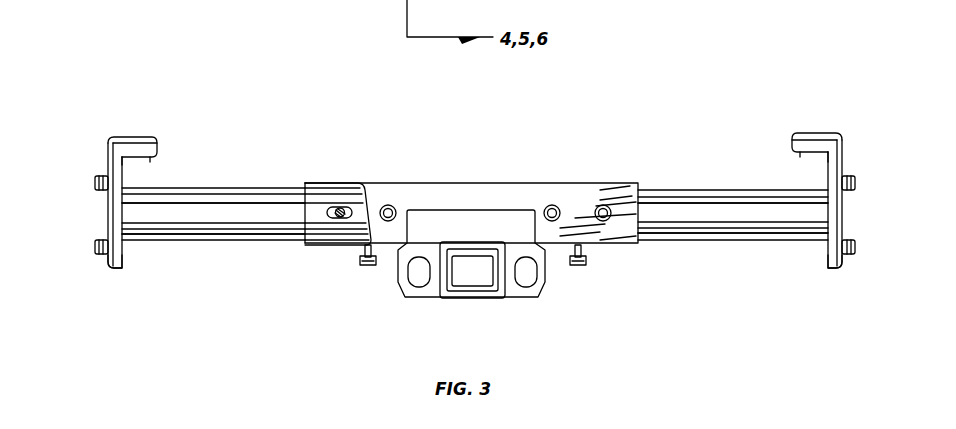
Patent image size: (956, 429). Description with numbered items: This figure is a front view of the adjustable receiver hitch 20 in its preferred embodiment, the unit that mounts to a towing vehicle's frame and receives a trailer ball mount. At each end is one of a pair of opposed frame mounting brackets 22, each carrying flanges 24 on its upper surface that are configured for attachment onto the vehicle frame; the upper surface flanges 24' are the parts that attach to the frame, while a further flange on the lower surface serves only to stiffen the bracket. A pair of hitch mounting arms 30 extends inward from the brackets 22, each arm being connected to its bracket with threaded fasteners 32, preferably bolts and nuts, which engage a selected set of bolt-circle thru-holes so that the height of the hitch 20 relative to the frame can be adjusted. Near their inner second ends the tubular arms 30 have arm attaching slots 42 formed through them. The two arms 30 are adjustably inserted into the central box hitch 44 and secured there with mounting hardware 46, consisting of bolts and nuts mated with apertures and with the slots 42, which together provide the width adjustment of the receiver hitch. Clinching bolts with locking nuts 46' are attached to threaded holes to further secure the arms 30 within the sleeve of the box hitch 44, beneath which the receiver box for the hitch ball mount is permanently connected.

The adjustable receiver hitch 20 is at (477, 174).
The frame mounting bracket 22 is at (103, 135).
The flange 24 is at (475, 81).
The upper surface flange 24' is at (475, 119).
The hitch mounting arm 30 is at (250, 188).
The threaded fastener 32 is at (97, 258).
The arm attaching slot 42 is at (360, 246).
The box hitch 44 is at (563, 273).
The mounting hardware 46 is at (495, 175).
The clinching bolt with locking nut 46' is at (523, 292).